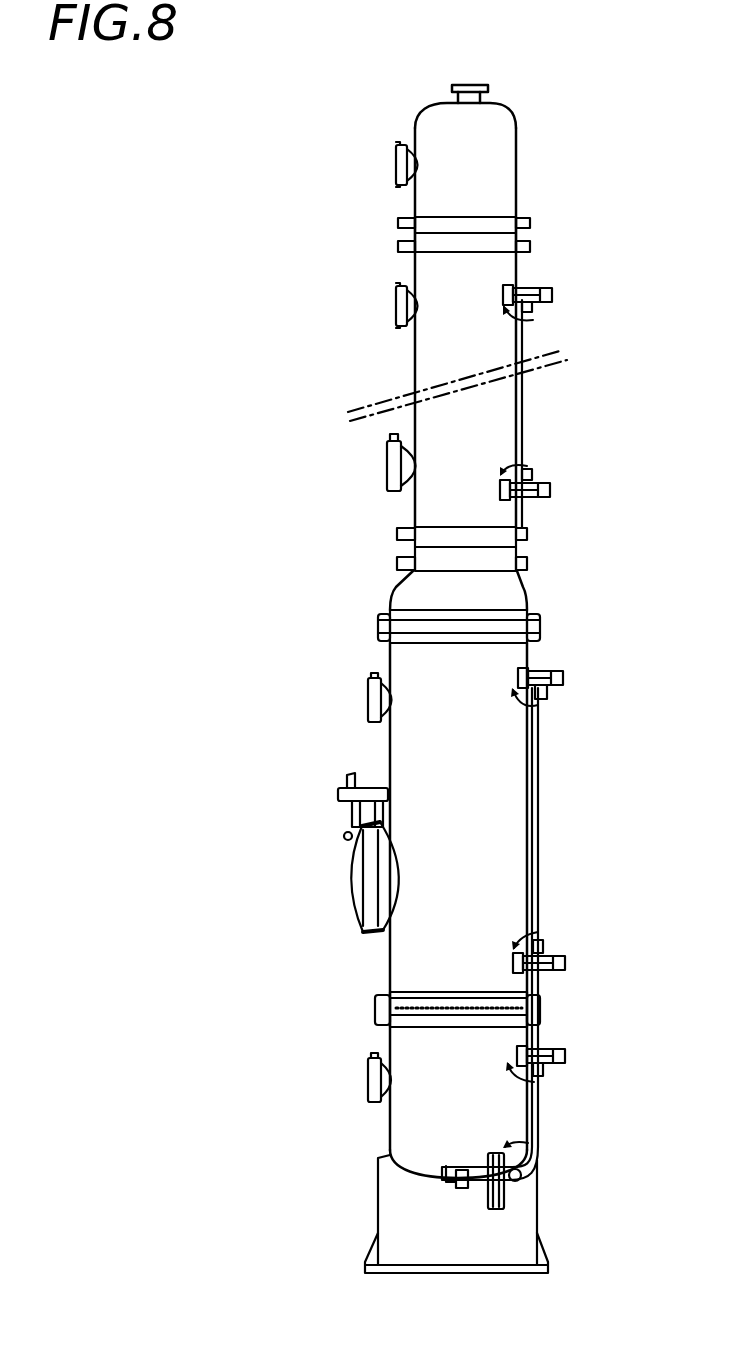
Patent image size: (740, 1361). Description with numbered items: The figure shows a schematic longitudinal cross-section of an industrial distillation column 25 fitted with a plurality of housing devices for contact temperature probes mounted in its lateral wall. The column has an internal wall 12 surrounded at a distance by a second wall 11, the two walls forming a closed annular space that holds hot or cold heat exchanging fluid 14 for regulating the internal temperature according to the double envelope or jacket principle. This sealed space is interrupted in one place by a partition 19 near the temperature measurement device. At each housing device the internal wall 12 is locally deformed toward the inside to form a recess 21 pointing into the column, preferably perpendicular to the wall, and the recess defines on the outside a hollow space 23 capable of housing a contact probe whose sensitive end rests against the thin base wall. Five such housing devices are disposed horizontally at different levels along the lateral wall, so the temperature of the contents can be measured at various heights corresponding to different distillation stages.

The second wall 11 is at (540, 818).
The internal wall 12 is at (534, 767).
The heat exchanging fluid 14 is at (534, 1122).
The partition 19 is at (522, 1176).
The recess 21 is at (526, 325).
The hollow space 23 is at (536, 285).
The industrial distillation column 25 is at (255, 760).